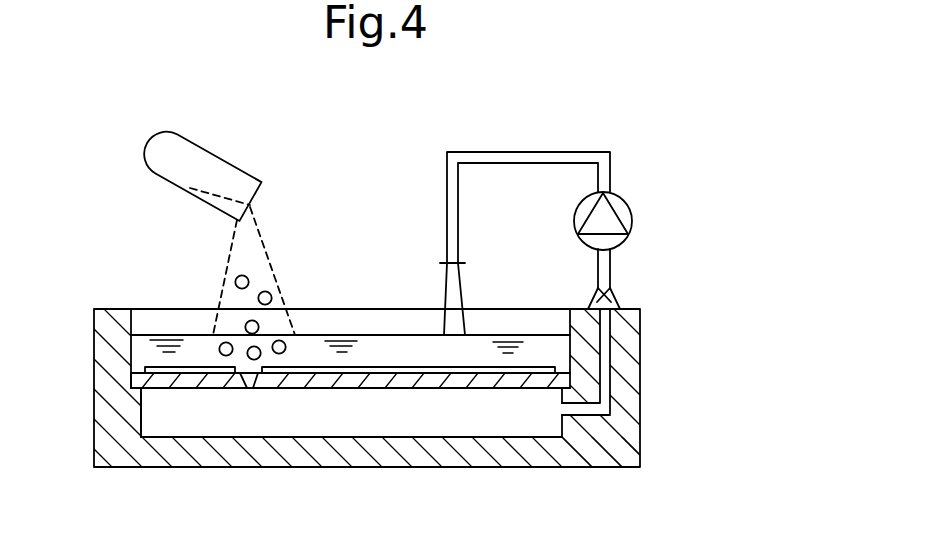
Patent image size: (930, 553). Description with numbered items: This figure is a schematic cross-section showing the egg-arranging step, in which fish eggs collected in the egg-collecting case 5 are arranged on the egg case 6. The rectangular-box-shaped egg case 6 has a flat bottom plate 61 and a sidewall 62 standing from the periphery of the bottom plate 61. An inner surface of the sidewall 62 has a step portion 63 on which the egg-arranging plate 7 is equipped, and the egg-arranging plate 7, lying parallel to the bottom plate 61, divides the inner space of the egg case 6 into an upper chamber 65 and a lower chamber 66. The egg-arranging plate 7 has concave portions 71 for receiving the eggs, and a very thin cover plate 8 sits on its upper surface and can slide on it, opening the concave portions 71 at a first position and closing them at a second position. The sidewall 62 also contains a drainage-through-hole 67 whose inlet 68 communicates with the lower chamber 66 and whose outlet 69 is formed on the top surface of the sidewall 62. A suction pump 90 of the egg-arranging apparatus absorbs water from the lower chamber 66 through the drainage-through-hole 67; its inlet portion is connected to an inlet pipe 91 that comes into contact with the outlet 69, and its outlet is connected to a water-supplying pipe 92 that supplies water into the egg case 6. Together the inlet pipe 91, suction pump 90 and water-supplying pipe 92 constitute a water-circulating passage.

The egg-collecting case 5 is at (212, 150).
The egg case 6 is at (657, 459).
The bottom plate 61 is at (432, 452).
The sidewall 62 is at (108, 320).
The step portion 63 is at (143, 390).
The upper chamber 65 is at (415, 343).
The lower chamber 66 is at (352, 415).
The drainage-through-hole 67 is at (604, 360).
The inlet 68 is at (562, 408).
The outlet 69 is at (603, 322).
The egg-arranging plate 7 is at (192, 409).
The concave portions 71 is at (250, 388).
The cover plate 8 is at (408, 370).
The suction pump 90 is at (637, 215).
The inlet pipe 91 is at (603, 293).
The water-supplying pipe 92 is at (533, 157).